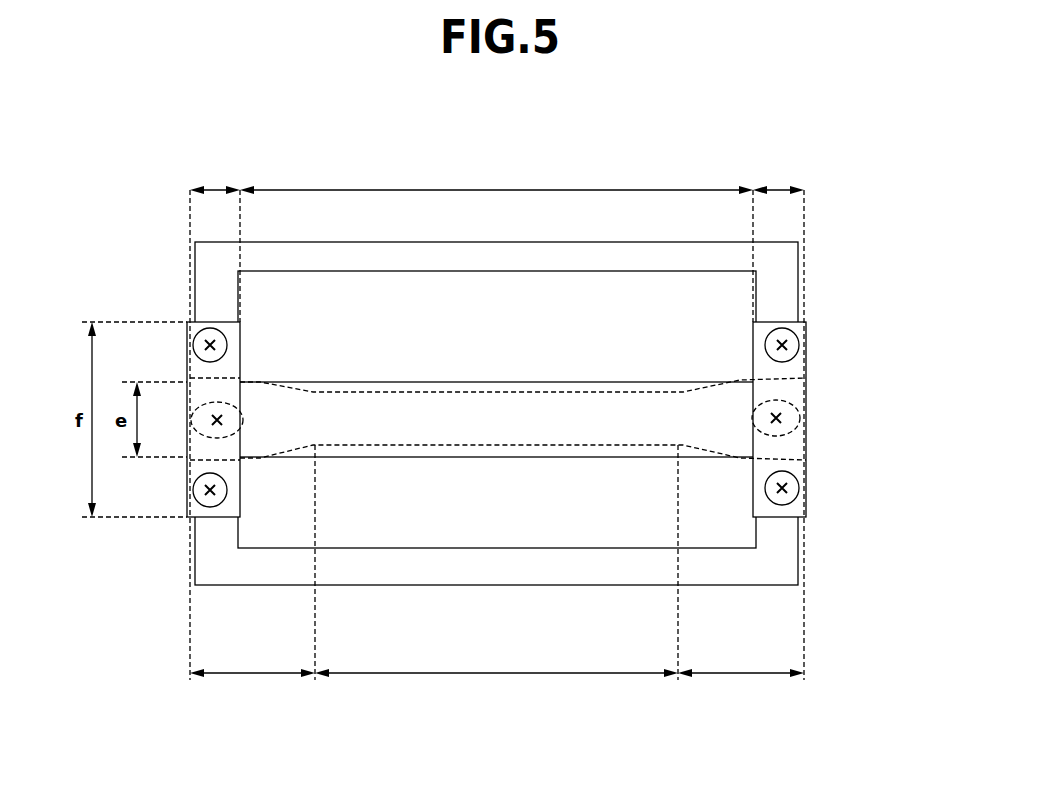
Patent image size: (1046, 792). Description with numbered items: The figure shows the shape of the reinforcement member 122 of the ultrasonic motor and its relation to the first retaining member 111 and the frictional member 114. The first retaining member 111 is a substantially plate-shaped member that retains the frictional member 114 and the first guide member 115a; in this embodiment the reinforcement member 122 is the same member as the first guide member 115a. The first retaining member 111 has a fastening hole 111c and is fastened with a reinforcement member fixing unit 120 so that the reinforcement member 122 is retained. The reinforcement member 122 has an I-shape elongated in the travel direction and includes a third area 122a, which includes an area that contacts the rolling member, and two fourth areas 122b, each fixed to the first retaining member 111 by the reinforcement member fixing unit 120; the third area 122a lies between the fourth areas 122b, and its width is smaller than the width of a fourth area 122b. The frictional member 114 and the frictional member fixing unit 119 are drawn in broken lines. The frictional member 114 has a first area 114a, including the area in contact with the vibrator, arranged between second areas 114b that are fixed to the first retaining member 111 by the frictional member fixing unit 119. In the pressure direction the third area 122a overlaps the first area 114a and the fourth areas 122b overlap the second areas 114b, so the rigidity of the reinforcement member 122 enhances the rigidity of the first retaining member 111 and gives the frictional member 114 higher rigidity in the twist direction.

The first retaining member 111 is at (783, 562).
The fastening hole 111c is at (195, 340).
The frictional member 114 is at (793, 391).
The first area 114a is at (496, 685).
The second area 114b is at (493, 698).
The first guide member 115a is at (788, 510).
The frictional member fixing unit 119 is at (197, 417).
The reinforcement member fixing unit 120 is at (499, 396).
The reinforcement member 122 is at (573, 421).
The third area 122a is at (496, 179).
The fourth area 122b is at (497, 164).